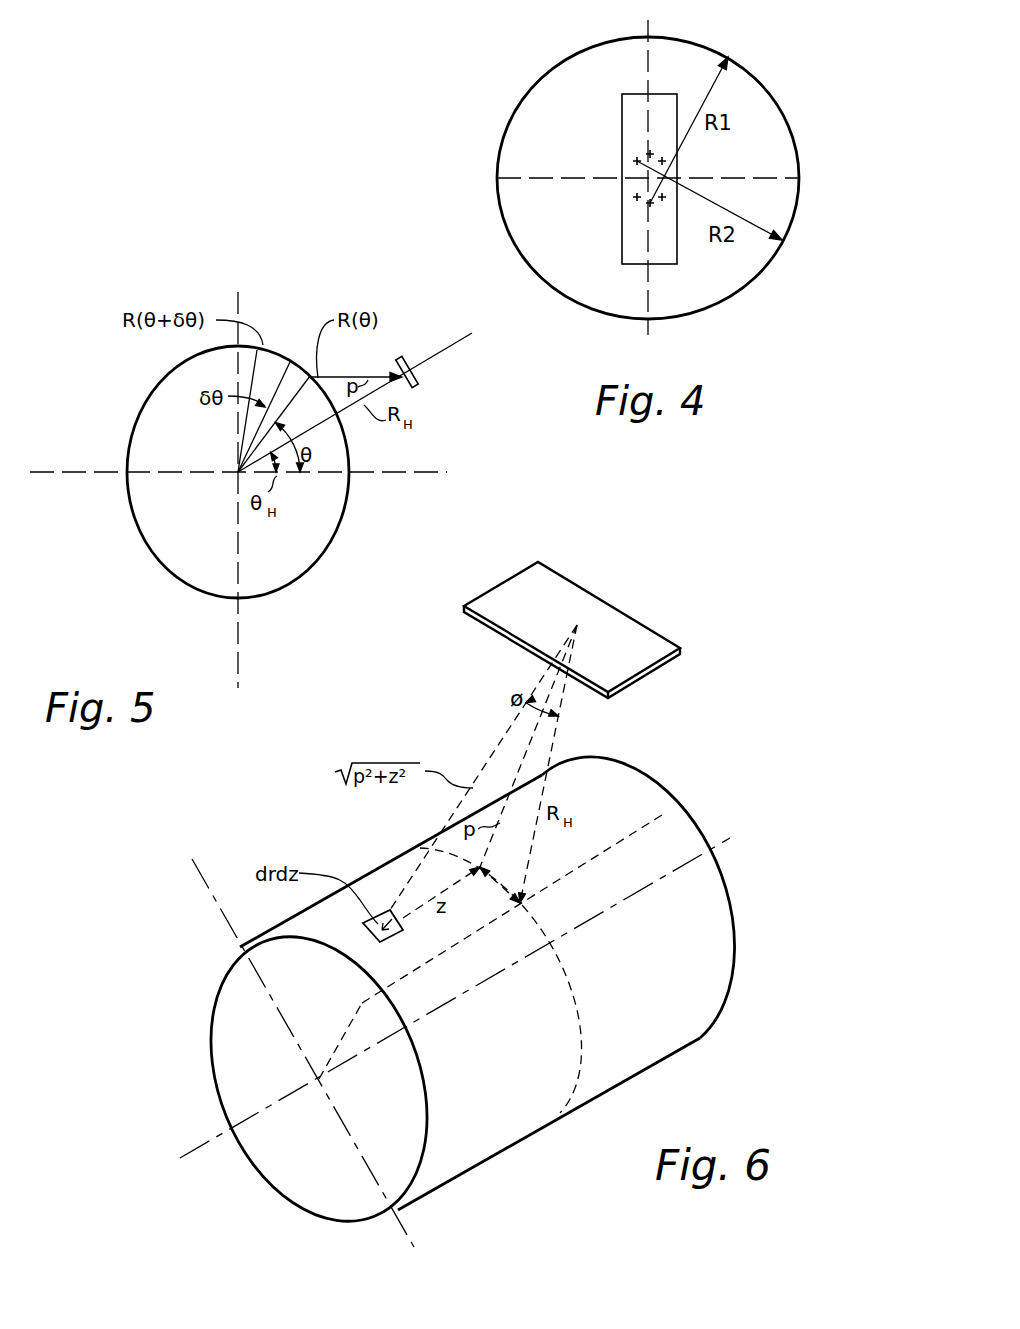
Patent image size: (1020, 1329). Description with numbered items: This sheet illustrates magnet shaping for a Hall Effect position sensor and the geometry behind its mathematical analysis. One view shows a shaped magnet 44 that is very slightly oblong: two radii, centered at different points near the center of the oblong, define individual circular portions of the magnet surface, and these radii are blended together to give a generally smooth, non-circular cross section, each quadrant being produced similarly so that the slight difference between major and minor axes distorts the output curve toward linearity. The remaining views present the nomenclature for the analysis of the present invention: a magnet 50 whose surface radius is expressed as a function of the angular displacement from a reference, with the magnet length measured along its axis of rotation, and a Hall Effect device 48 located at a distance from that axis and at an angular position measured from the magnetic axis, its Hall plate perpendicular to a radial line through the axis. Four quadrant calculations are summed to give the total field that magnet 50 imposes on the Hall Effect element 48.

In FIG. 4, the shaped magnet 44 is at (777, 101).
In FIG. 5, the Hall Effect device 48 is at (414, 386).
In FIG. 6, the Hall Effect device 48 is at (613, 638).
In FIG. 5, the magnet 50 is at (176, 568).
In FIG. 6, the magnet 50 is at (451, 1164).